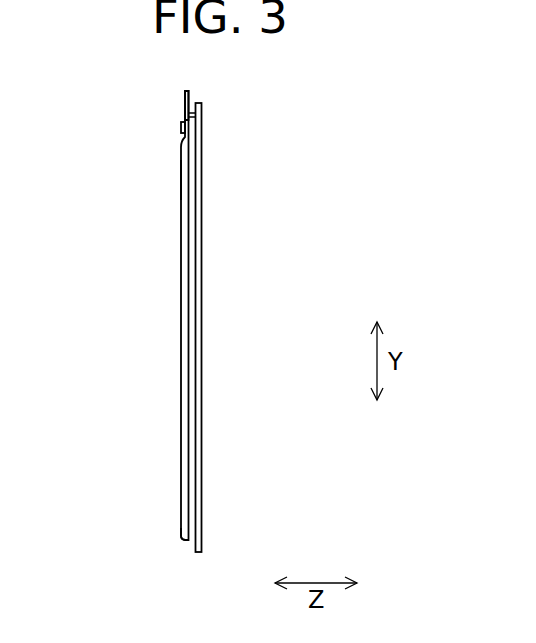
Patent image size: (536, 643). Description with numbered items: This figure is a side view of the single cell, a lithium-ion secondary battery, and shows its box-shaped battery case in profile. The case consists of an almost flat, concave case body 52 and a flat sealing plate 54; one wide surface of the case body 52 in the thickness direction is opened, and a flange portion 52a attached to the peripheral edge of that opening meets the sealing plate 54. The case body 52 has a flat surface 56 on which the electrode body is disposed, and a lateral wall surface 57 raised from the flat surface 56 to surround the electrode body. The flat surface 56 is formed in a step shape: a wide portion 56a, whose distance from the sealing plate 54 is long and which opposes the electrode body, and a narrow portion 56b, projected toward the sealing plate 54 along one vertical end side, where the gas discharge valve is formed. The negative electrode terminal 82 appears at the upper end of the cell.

The case body 52 is at (180, 291).
The flange portion 52a is at (193, 113).
The sealing plate 54 is at (203, 292).
The flat surface 56 is at (181, 410).
The wide portion 56a is at (182, 178).
The narrow portion 56b is at (182, 134).
The lateral wall surface 57 is at (186, 541).
The negative electrode terminal 82 is at (184, 99).